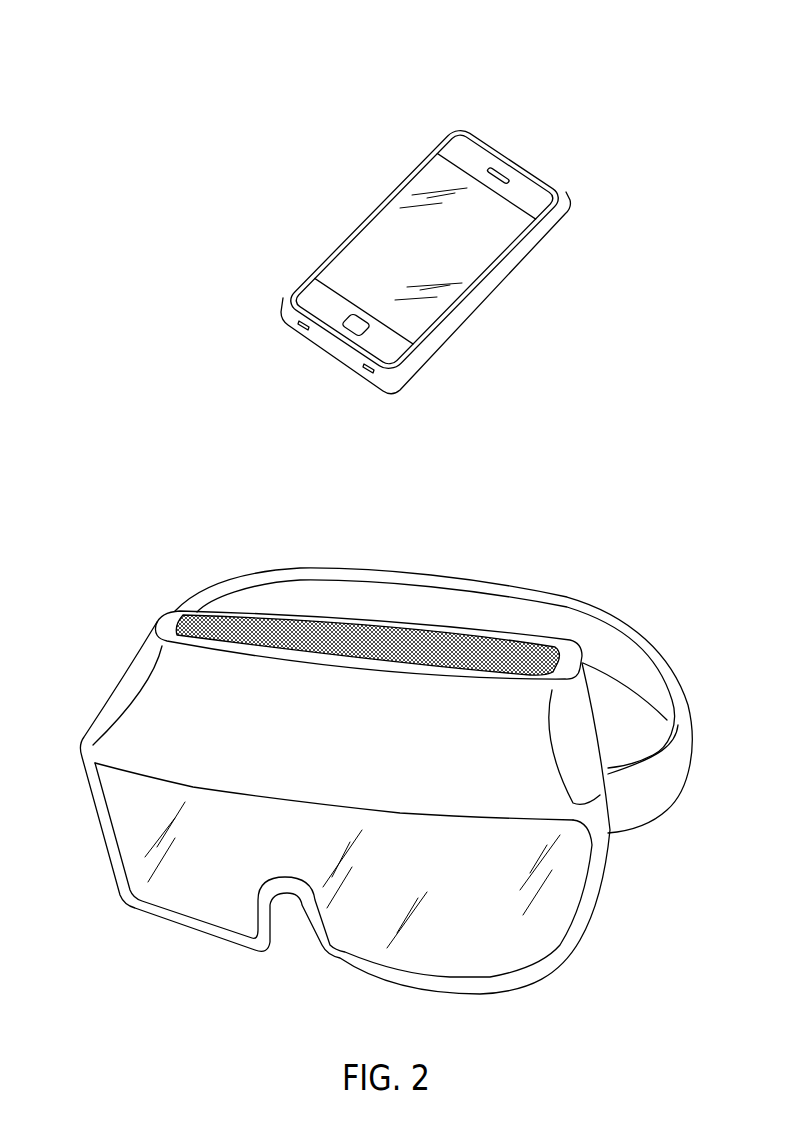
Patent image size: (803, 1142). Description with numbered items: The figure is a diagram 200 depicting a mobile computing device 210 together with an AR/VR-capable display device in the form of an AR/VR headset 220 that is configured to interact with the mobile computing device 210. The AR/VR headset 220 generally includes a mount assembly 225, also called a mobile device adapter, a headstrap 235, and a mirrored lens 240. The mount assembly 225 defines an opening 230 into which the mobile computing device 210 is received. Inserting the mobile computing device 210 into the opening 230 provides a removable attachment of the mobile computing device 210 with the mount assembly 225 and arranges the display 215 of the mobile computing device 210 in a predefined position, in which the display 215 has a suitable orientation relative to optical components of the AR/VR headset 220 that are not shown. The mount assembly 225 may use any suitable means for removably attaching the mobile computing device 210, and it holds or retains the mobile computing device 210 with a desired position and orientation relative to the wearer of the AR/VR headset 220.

The diagram 200 is at (607, 60).
The mobile computing device 210 is at (532, 165).
The display 215 is at (377, 248).
The AR/VR headset 220 is at (108, 580).
The mount assembly 225 is at (105, 715).
The opening 230 is at (390, 640).
The headstrap 235 is at (675, 773).
The mirrored lens 240 is at (523, 945).